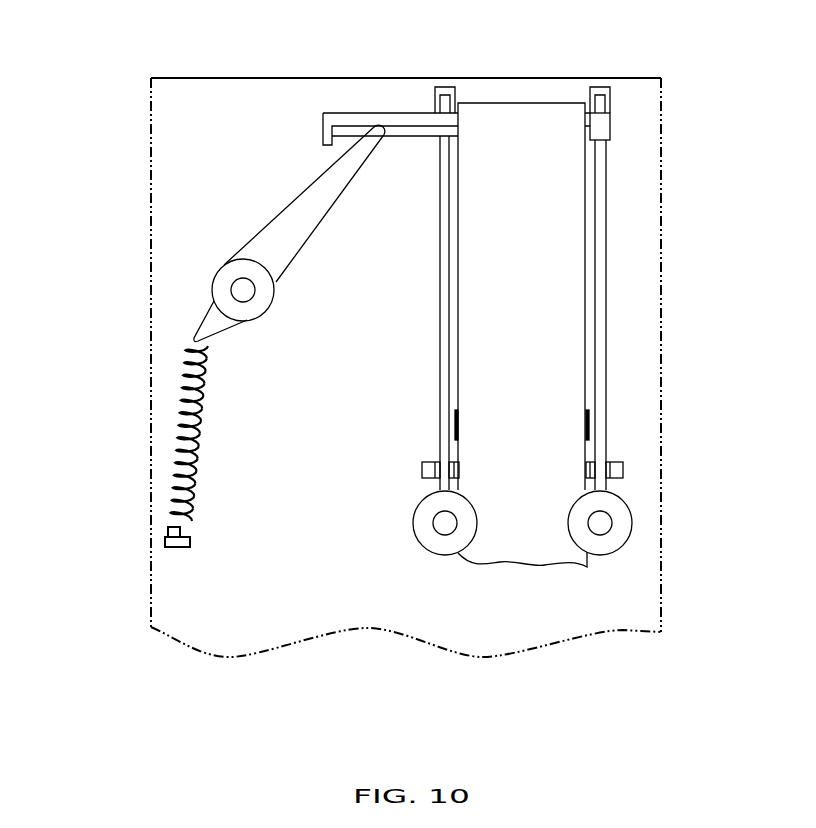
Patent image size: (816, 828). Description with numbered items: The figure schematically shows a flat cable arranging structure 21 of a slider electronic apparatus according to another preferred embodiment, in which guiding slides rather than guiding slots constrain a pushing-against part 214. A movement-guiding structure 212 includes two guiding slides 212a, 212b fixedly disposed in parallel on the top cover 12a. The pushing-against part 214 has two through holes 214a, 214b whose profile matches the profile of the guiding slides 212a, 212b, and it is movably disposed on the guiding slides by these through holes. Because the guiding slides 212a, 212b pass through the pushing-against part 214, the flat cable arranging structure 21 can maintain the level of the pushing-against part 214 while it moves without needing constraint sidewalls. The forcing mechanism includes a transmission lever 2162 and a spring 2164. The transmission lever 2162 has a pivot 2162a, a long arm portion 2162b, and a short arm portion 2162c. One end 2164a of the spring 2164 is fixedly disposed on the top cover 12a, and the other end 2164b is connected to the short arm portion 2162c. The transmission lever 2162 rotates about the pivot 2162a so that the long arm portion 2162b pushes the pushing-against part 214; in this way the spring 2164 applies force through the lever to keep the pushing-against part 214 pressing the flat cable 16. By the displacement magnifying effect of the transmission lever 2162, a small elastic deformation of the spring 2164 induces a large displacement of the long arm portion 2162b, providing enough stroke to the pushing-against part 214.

The top cover 12a is at (635, 87).
The flat cable 16 is at (518, 111).
The flat cable arranging structure 21 is at (288, 108).
The pushing-against part 214 is at (487, 131).
The through hole 214a is at (444, 133).
The through hole 214b is at (600, 141).
The movement-guiding structure 212 is at (595, 345).
The guiding slide 212a is at (445, 327).
The guiding slide 212b is at (600, 263).
The transmission lever 2162 is at (202, 233).
The pivot 2162a is at (240, 288).
The long arm portion 2162b is at (285, 236).
The short arm portion 2162c is at (208, 325).
The spring 2164 is at (114, 445).
The end of the spring 2164a is at (172, 515).
The other end of the spring 2164b is at (187, 383).